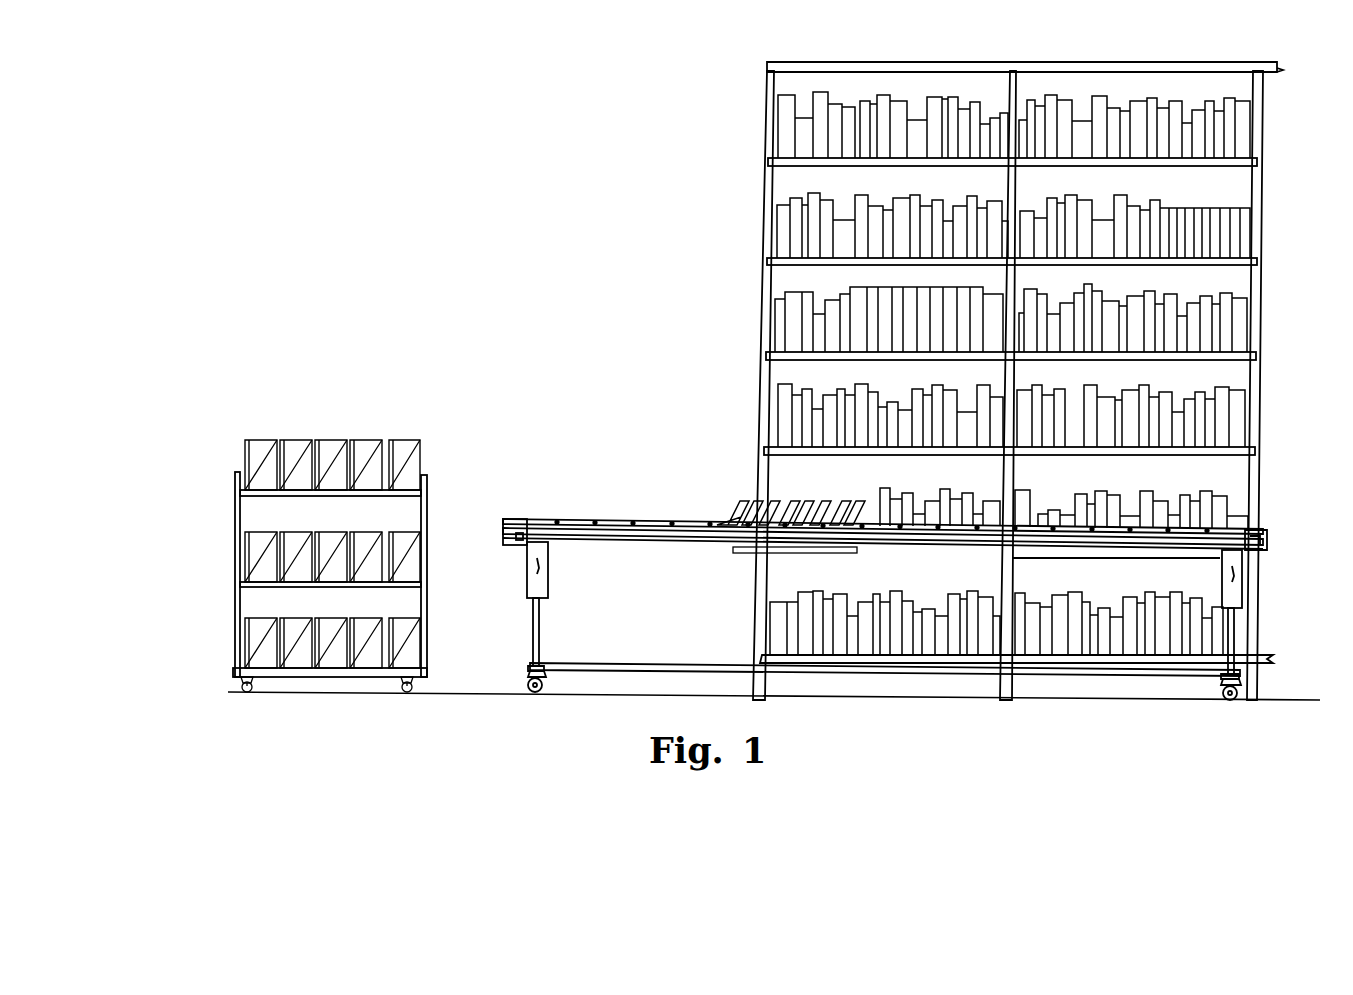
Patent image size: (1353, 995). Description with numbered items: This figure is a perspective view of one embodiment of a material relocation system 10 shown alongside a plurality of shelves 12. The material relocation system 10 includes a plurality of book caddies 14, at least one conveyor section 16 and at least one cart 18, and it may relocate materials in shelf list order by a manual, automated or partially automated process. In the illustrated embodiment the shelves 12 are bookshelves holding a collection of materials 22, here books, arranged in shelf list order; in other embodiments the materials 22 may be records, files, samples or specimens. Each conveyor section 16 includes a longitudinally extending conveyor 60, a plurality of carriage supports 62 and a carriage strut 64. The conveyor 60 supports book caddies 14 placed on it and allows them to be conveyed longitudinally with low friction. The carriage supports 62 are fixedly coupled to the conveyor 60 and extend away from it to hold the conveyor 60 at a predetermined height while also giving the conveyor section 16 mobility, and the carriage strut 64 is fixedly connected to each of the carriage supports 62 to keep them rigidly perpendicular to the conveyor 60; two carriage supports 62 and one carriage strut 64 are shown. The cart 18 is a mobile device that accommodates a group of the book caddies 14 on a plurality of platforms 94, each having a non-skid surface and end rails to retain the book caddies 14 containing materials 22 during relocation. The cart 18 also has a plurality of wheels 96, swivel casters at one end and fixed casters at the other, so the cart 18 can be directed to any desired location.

The material relocation system 10 is at (290, 388).
The shelves 12 is at (796, 62).
The book caddies 14 is at (415, 457).
The conveyor section 16 is at (633, 497).
The cart 18 is at (231, 492).
The materials 22 is at (396, 447).
The conveyor 60 is at (1262, 508).
The carriage supports 62 is at (553, 582).
The carriage strut 64 is at (897, 677).
The platforms 94 is at (410, 497).
The wheels 96 is at (248, 694).